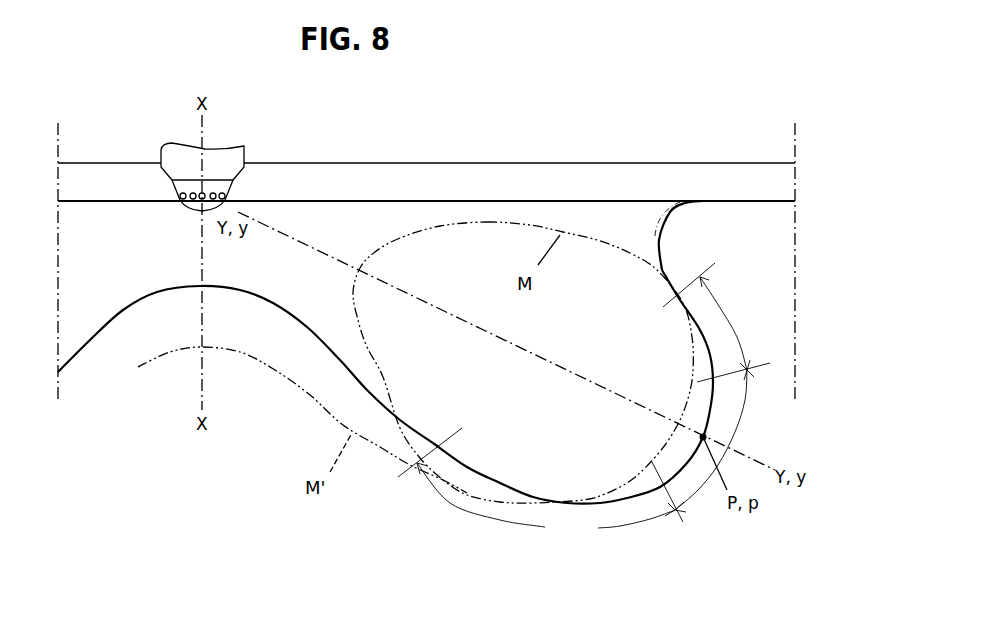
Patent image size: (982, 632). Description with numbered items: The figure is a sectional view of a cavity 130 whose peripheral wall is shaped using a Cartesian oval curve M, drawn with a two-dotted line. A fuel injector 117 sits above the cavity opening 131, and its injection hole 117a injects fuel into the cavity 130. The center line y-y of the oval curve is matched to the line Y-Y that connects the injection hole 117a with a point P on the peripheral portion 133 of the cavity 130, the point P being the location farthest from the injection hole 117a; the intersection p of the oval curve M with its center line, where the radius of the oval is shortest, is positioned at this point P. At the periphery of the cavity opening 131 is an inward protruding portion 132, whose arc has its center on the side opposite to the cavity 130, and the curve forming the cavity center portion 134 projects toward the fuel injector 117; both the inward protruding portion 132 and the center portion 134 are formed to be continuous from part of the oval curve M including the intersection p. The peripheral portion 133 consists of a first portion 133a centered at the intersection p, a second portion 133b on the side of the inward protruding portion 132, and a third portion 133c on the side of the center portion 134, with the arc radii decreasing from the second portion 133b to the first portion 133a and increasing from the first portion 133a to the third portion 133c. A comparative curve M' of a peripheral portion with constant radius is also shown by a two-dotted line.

The fuel injector 117 is at (223, 160).
The injection hole 117a is at (208, 201).
The cavity 130 is at (385, 352).
The cavity opening 131 is at (490, 200).
The inward protruding portion 132 is at (660, 242).
The peripheral portion 133 is at (603, 502).
The first portion 133a is at (713, 446).
The second portion 133b is at (716, 322).
The third portion 133c is at (536, 485).
The cavity center portion 134 is at (315, 341).